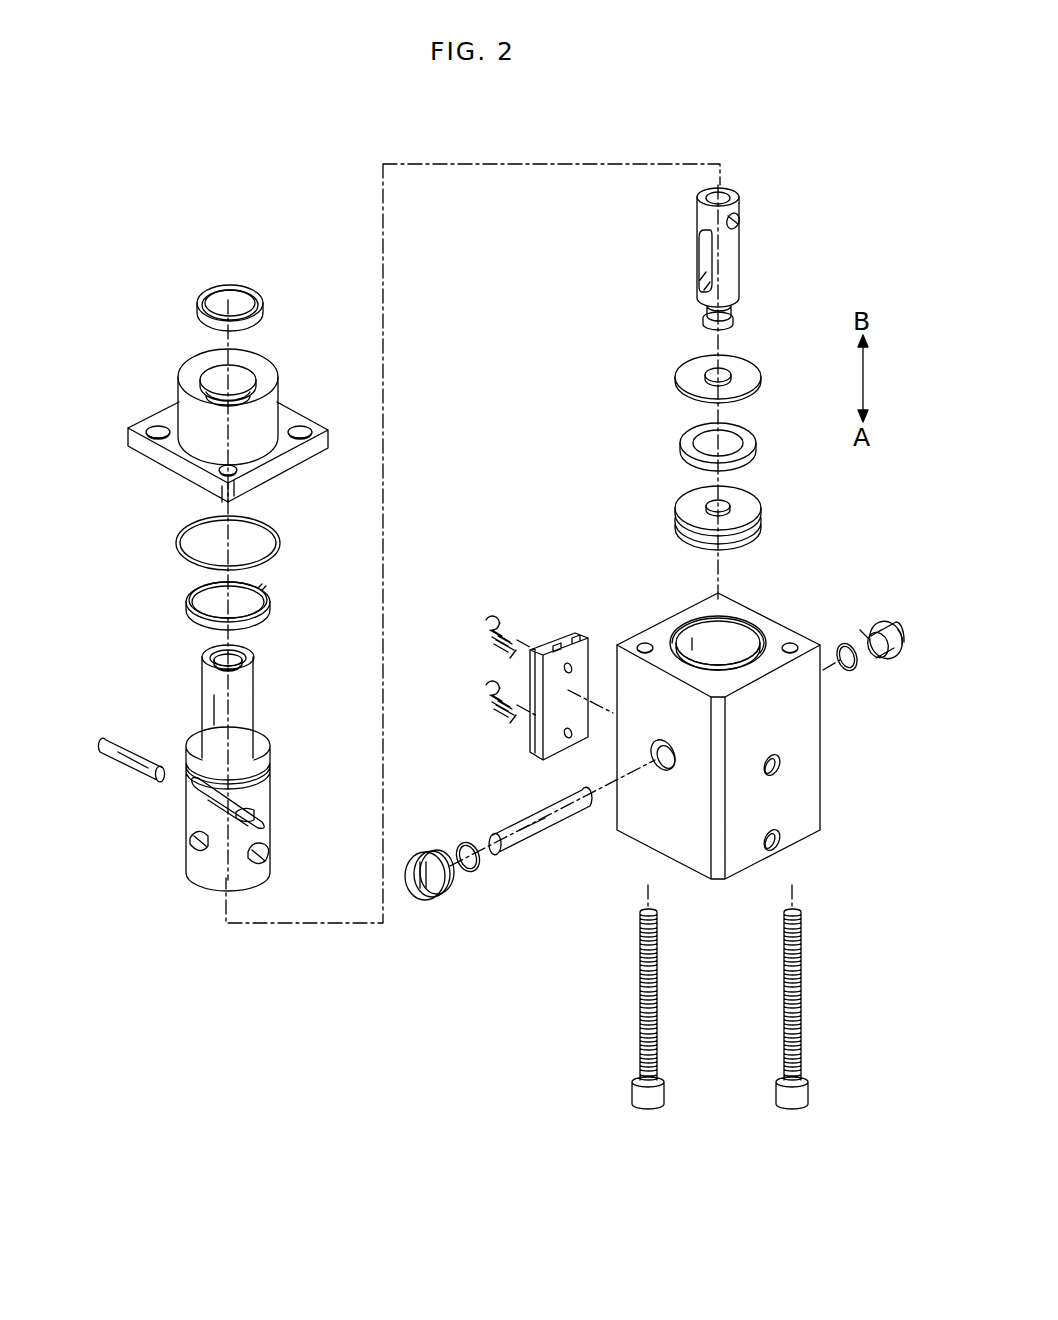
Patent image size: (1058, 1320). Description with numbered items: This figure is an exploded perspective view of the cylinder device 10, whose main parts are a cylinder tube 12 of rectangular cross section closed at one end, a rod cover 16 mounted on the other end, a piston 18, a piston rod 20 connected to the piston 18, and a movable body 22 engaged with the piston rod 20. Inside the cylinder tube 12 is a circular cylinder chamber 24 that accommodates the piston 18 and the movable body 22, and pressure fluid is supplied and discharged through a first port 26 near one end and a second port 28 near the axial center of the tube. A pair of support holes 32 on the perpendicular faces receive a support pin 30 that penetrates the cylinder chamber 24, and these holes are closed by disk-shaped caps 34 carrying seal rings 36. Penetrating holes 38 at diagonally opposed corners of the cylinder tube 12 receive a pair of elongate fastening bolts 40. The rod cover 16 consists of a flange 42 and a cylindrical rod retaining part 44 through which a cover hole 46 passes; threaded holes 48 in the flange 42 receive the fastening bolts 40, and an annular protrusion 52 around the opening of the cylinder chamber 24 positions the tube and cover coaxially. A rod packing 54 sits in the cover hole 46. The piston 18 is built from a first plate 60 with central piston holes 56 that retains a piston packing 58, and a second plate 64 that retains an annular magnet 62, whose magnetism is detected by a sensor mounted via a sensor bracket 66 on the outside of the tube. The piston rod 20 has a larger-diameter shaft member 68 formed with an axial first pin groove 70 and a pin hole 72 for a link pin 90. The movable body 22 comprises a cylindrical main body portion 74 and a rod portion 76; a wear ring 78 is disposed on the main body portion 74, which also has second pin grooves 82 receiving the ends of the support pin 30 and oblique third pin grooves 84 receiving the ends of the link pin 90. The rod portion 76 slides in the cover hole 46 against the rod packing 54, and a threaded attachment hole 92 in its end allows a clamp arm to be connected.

The cylinder device 10 is at (264, 107).
The cylinder tube 12 is at (830, 748).
The rod cover 16 is at (152, 406).
The piston 18 is at (645, 501).
The piston rod 20 is at (748, 251).
The movable body 22 is at (280, 787).
The cylinder chamber 24 is at (740, 622).
The first port 26 is at (776, 828).
The second port 28 is at (770, 752).
The support pin 30 is at (528, 812).
The support holes 32 is at (663, 770).
The caps 34 is at (892, 612).
The seal rings 36 is at (855, 668).
The penetrating holes 38 is at (640, 642).
The fastening bolts 40 is at (784, 1013).
The flange 42 is at (172, 468).
The rod retaining part 44 is at (258, 367).
The cover hole 46 is at (220, 382).
The threaded holes 48 is at (305, 426).
The annular protrusion 52 is at (700, 622).
The rod packing 54 is at (224, 290).
The piston holes 56 is at (706, 370).
The piston packing 58 is at (756, 532).
The first plate 60 is at (748, 492).
The magnet 62 is at (688, 428).
The second plate 64 is at (748, 364).
The sensor bracket 66 is at (556, 718).
The shaft member 68 is at (706, 216).
The first pin groove 70 is at (705, 262).
The pin hole 72 is at (745, 216).
The main body portion 74 is at (216, 872).
The rod portion 76 is at (245, 697).
The wear ring 78 is at (188, 603).
The second pin grooves 82 is at (262, 858).
The third pin grooves 84 is at (200, 800).
The link pin 90 is at (128, 754).
The attachment hole 92 is at (214, 660).